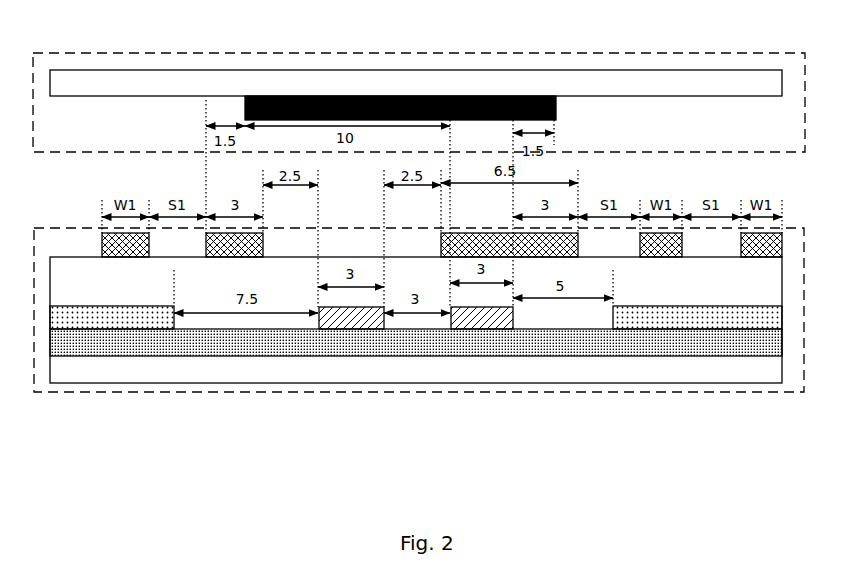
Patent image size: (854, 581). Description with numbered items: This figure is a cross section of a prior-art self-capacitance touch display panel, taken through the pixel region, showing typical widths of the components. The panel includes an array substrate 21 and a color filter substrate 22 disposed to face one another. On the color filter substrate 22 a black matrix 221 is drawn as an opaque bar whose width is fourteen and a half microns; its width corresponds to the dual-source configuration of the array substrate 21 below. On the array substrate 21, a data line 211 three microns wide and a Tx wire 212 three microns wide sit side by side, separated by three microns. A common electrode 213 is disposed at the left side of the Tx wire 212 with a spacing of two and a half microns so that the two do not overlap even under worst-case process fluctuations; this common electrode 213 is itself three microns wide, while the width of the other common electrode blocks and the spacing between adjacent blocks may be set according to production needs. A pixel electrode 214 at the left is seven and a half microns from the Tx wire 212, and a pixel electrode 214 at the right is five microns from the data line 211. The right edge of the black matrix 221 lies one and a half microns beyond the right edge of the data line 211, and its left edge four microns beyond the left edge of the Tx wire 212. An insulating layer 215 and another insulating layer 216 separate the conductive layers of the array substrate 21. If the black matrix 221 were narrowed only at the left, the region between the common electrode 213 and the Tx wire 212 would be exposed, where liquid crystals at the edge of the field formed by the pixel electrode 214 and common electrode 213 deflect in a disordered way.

The array substrate 21 is at (752, 392).
The color filter substrate 22 is at (265, 53).
The black matrix 221 is at (487, 97).
The data line 211 is at (477, 325).
The Tx wire 212 is at (350, 325).
The common electrode 213 is at (225, 258).
The pixel electrode 214 is at (70, 320).
The insulating layer 215 is at (167, 340).
The insulating layer 216 is at (563, 318).